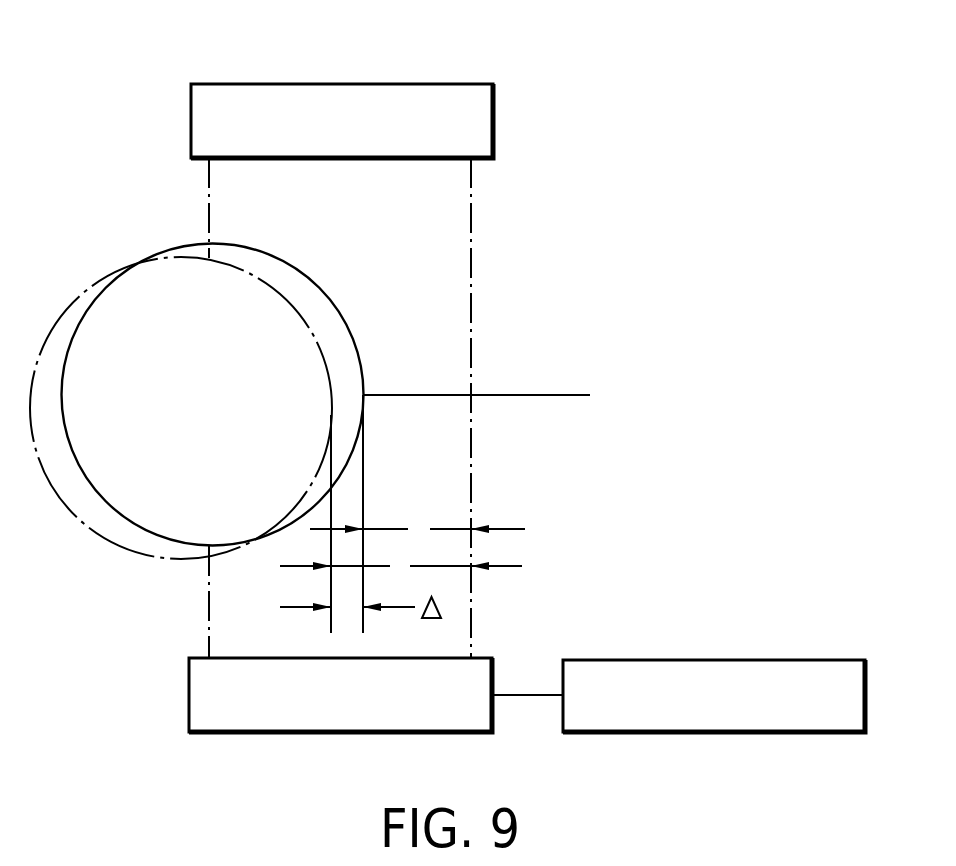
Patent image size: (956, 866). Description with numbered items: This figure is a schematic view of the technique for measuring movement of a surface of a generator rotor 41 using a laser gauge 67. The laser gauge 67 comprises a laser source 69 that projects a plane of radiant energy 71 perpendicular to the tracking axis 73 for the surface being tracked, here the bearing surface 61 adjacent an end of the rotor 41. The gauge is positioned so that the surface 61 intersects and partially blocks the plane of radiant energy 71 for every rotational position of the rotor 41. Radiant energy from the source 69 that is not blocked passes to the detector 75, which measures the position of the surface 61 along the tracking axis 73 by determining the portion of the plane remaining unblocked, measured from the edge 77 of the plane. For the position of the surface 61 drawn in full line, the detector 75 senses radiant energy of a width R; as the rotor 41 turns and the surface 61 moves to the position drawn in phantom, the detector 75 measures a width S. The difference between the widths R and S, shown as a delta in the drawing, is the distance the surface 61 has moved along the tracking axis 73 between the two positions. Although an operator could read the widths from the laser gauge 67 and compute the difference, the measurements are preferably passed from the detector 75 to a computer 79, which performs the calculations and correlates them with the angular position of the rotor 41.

The rotor 41 is at (124, 246).
The bearing surface 61 is at (307, 277).
The laser gauge 67 is at (543, 123).
The laser source 69 is at (425, 84).
The plane of radiant energy 71 is at (428, 285).
The tracking axis 73 is at (518, 395).
The detector 75 is at (494, 672).
The edge 77 is at (471, 492).
The computer 79 is at (661, 660).